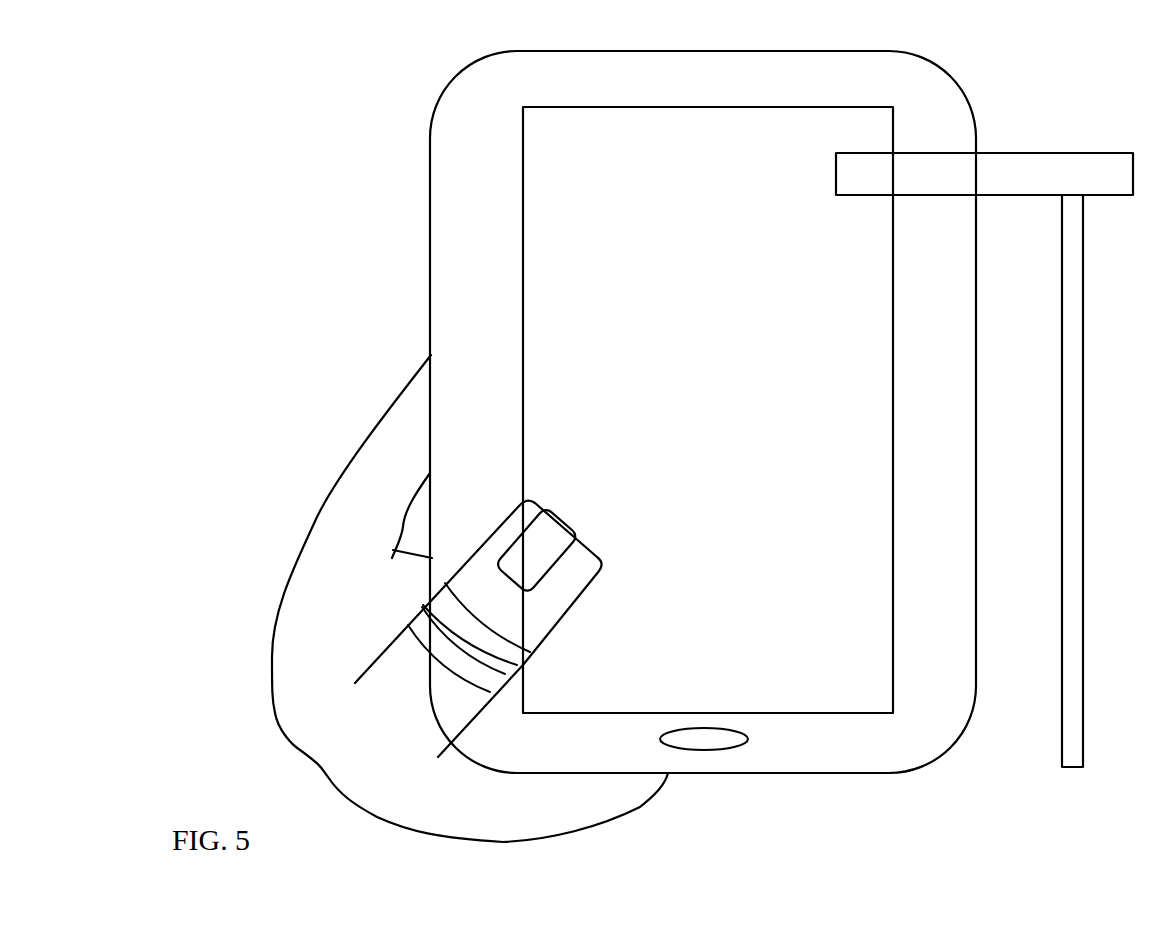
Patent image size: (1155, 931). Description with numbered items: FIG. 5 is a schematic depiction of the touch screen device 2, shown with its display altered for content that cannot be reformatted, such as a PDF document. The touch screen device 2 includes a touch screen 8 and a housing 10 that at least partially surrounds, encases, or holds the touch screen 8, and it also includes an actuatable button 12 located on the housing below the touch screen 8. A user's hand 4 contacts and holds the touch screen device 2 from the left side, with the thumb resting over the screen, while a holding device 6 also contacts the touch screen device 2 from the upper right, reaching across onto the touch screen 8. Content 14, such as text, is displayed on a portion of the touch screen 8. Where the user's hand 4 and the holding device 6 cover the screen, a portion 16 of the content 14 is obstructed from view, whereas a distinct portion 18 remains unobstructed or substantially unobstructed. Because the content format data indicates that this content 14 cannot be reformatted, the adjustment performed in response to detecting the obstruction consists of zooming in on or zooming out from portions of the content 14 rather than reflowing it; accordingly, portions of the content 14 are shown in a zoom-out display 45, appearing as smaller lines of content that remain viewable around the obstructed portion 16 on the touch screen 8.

The touch screen device 2 is at (400, 88).
The user's hand 4 is at (320, 409).
The holding device 6 is at (1035, 178).
The touch screen 8 is at (706, 141).
The housing 10 is at (770, 83).
The button 12 is at (718, 738).
The content 14 is at (610, 255).
The obstructed portion 16 is at (813, 146).
The distinct portion 18 is at (800, 499).
The zoom-out display 45 is at (598, 152).